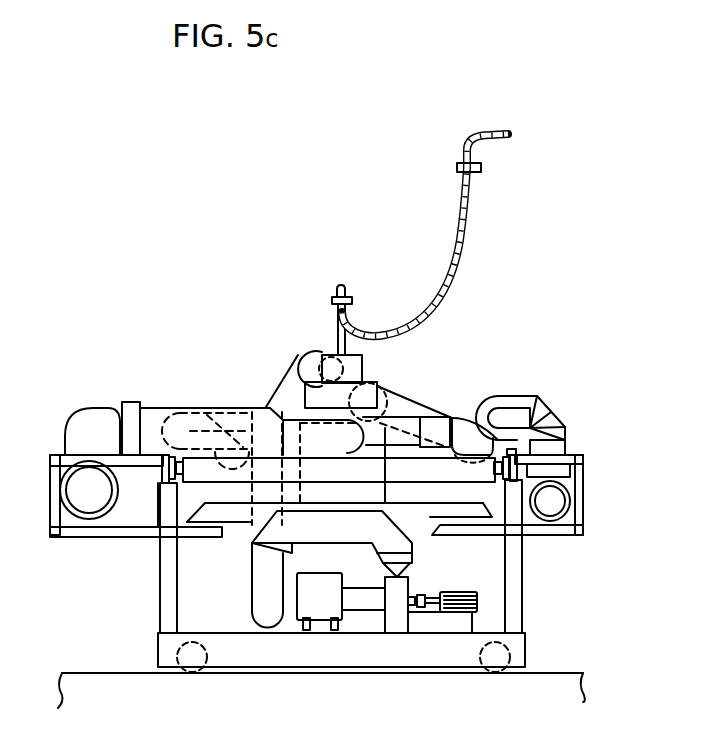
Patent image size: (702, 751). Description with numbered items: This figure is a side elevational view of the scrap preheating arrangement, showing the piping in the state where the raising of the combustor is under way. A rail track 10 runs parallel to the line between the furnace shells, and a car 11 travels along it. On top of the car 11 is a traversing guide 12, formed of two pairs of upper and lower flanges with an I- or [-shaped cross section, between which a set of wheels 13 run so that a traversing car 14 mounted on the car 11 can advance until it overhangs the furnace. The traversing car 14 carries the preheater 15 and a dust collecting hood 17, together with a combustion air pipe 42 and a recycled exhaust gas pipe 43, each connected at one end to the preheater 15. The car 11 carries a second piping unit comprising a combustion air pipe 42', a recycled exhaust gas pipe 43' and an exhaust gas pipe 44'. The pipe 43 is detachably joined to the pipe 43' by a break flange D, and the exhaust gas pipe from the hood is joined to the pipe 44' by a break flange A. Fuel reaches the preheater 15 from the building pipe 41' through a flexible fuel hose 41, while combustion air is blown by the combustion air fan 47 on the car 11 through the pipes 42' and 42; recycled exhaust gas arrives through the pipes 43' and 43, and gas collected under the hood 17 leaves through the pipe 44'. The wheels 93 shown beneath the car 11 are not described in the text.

The rail track 10 is at (566, 665).
The car 11 is at (60, 490).
The traversing guide 12 is at (170, 465).
The wheels 13 is at (172, 477).
The traversing car 14 is at (422, 466).
The preheater 15 is at (363, 368).
The dust collecting hood 17 is at (230, 525).
The fuel hose 41 is at (425, 235).
The pipe 41' is at (450, 146).
The combustion air pipe 42 is at (293, 429).
The combustion air pipe 42' is at (241, 520).
The recycled exhaust gas pipe 43 is at (490, 408).
The recycled exhaust gas pipe 43' is at (569, 522).
The exhaust gas pipe 44' is at (75, 480).
The combustion air fan 47 is at (400, 590).
The wheel 93 is at (192, 676).
The break flange A is at (143, 408).
The break flange D is at (565, 447).